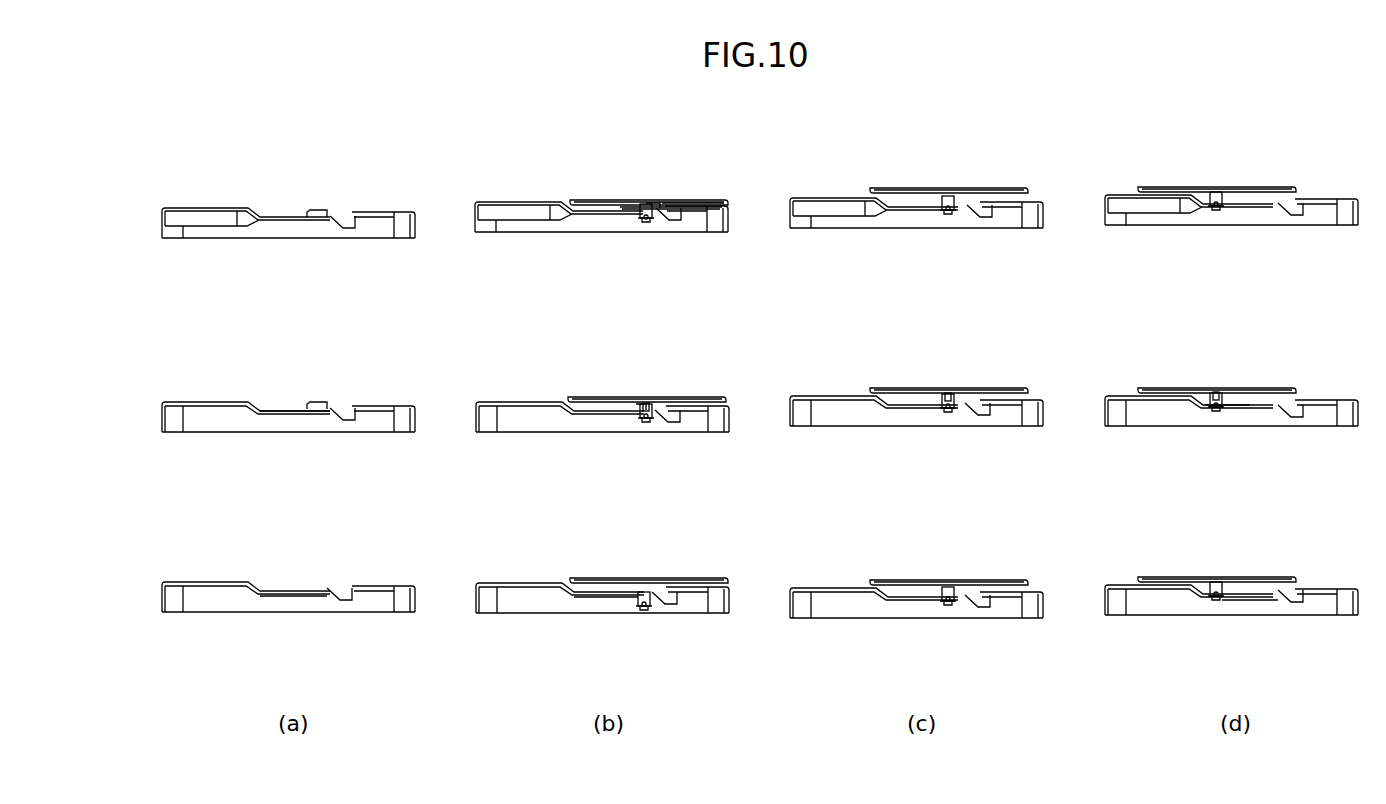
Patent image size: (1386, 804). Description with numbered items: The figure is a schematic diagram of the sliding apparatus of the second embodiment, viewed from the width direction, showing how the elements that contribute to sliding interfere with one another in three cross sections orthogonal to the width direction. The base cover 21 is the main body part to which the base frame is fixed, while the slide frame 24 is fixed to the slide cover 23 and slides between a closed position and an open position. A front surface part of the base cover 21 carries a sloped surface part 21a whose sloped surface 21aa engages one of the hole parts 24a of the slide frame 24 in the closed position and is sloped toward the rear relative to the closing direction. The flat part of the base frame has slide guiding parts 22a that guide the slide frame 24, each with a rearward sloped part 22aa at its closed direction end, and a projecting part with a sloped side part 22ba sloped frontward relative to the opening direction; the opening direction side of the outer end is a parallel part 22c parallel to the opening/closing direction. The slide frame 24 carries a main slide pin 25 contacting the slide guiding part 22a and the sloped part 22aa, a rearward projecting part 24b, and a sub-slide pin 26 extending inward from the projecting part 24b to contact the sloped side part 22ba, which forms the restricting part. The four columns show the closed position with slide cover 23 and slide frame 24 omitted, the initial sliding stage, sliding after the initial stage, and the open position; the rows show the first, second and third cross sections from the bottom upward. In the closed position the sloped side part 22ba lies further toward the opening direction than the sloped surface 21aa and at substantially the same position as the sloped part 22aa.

The base cover 21 is at (195, 205).
The sloped surface part 21a is at (339, 211).
The sloped surface 21aa is at (347, 213).
The slide guiding part 22a is at (287, 402).
The sloped part 22aa is at (340, 408).
The sloped side part 22ba is at (337, 590).
The parallel part 22c is at (285, 597).
The slide cover 23 is at (606, 201).
The slide frame 24 is at (583, 199).
The hole part 24a is at (673, 201).
The projecting part 24b is at (647, 222).
The main slide pin 25 is at (650, 403).
The sub-slide pin 26 is at (640, 218).